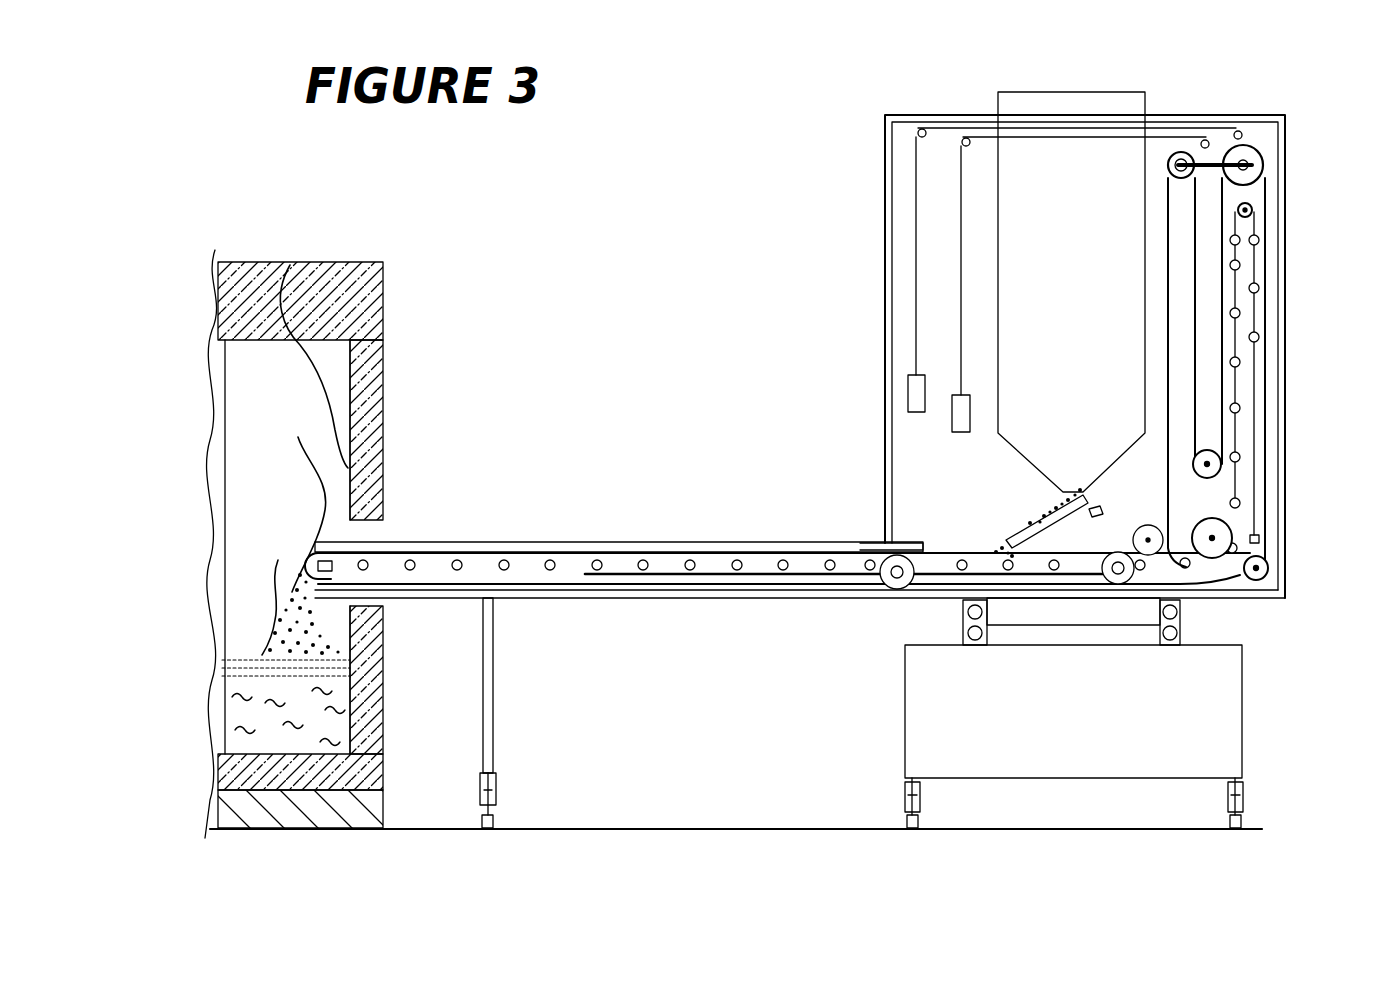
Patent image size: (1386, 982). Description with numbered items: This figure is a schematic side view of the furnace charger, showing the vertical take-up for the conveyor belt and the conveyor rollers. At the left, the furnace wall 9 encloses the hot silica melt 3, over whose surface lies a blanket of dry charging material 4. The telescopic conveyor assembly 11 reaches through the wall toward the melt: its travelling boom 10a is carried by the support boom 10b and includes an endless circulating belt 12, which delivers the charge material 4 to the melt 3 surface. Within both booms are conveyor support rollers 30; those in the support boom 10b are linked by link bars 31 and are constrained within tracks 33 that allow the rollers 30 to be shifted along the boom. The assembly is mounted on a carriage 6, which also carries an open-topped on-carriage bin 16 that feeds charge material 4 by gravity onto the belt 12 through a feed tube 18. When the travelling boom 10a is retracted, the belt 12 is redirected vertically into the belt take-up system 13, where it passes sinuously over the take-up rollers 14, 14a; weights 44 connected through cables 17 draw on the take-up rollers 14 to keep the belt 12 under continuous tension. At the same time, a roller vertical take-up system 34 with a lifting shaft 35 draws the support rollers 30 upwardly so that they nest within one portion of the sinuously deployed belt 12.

The melt 3 is at (262, 688).
The charging material 4 is at (298, 437).
The carriage 6 is at (945, 738).
The furnace wall 9 is at (290, 265).
The travelling boom 10a is at (528, 565).
The support boom 10b is at (677, 543).
The telescopic conveyor assembly 11 is at (593, 543).
The endless circulating belt 12 is at (1148, 524).
The belt take-up system 13 is at (1180, 285).
The take-up rollers 14 is at (1178, 152).
The take-up roller 14a is at (1209, 450).
The on-carriage bin 16 is at (1045, 112).
The cables 17 is at (1010, 262).
The feed tube 18 is at (1037, 525).
The conveyor support rollers 30 is at (641, 578).
The link bars 31 is at (1234, 484).
The tracks 33 is at (1210, 577).
The roller vertical take-up system 34 is at (1245, 280).
The lifting shaft 35 is at (1253, 205).
The weights 44 is at (952, 420).